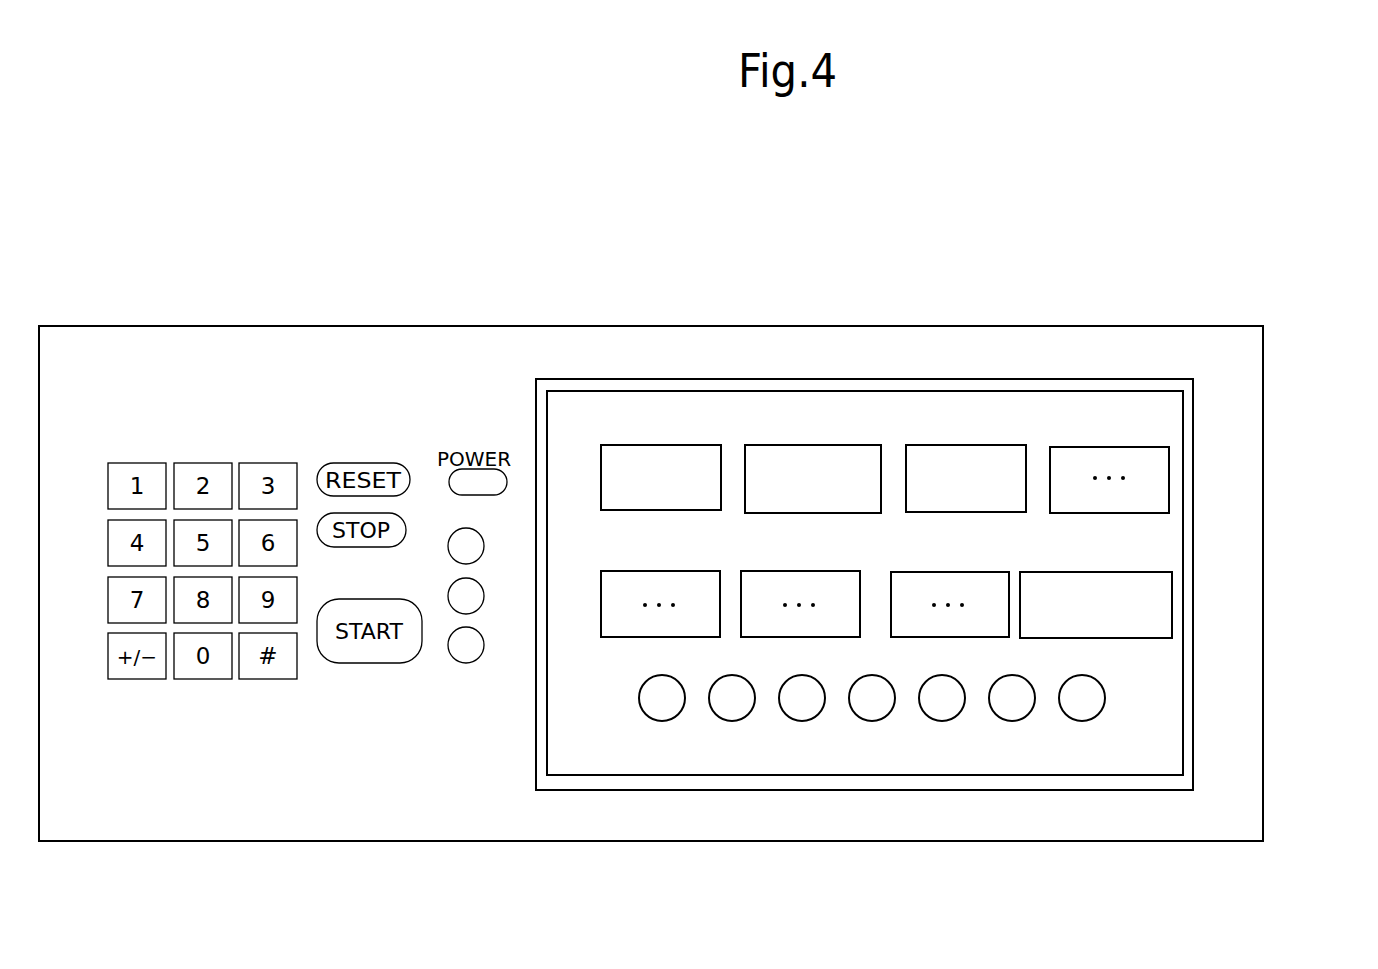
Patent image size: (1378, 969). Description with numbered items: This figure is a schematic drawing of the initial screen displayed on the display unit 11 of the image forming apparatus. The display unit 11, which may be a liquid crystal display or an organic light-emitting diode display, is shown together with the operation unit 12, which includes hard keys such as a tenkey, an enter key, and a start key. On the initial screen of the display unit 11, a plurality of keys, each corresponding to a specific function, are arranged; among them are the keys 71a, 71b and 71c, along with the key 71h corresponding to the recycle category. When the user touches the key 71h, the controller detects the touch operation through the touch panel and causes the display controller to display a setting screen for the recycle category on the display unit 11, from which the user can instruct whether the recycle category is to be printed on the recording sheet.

The operation unit 12 is at (1213, 324).
The display unit 11 is at (1042, 376).
The key 71a is at (660, 443).
The key 71b is at (798, 445).
The key 71c is at (948, 446).
The key corresponding to the recycle category 71h is at (1153, 605).